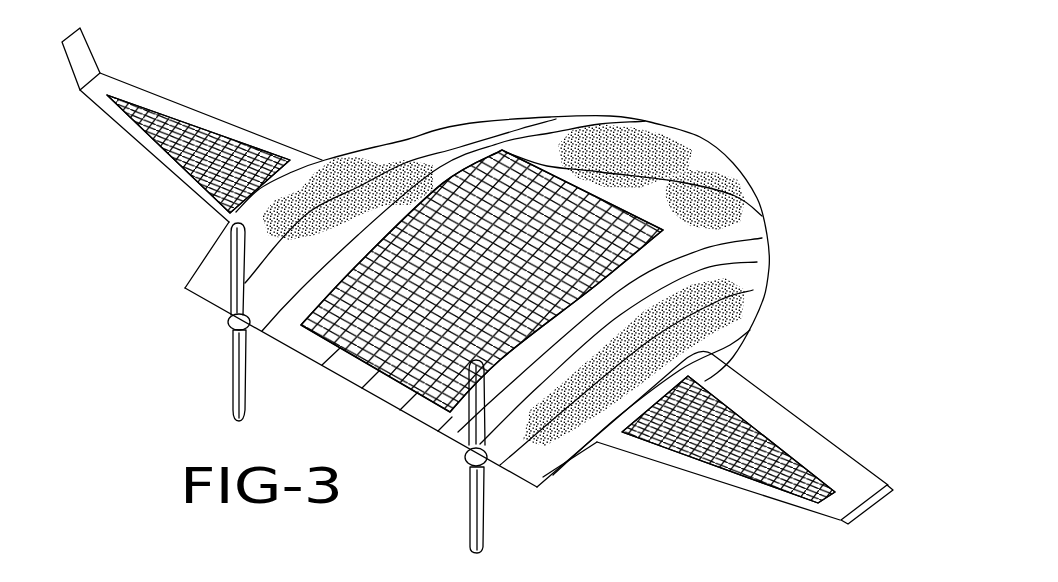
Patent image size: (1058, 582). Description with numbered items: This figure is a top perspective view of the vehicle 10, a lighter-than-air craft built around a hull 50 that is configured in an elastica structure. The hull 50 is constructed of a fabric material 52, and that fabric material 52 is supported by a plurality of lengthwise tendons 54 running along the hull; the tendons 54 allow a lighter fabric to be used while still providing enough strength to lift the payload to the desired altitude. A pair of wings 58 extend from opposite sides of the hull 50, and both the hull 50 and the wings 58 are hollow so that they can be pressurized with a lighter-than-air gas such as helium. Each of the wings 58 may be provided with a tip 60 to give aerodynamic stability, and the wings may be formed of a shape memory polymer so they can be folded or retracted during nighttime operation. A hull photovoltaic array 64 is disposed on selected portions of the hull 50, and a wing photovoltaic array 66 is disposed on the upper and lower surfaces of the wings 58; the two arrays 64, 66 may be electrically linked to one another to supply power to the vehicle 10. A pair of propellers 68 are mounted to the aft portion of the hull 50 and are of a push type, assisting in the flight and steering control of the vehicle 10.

The vehicle 10 is at (765, 108).
The hull 50 is at (765, 209).
The fabric material 52 is at (730, 264).
The lengthwise tendons 54 is at (707, 167).
The wings 58 is at (160, 173).
The wing tip 60 is at (80, 60).
The hull photovoltaic array 64 is at (550, 187).
The wing photovoltaic array 66 is at (160, 130).
The propellers 68 is at (240, 347).